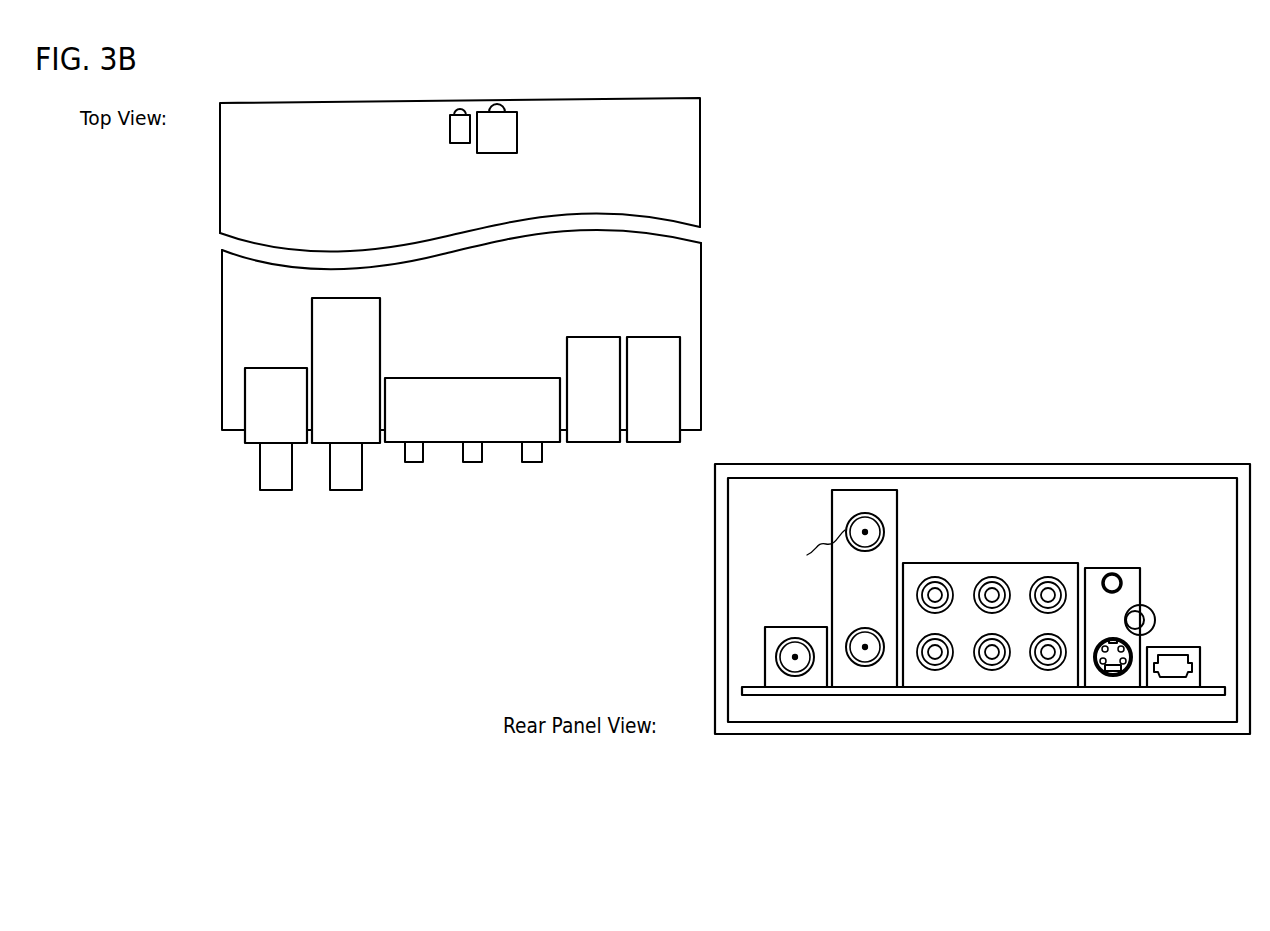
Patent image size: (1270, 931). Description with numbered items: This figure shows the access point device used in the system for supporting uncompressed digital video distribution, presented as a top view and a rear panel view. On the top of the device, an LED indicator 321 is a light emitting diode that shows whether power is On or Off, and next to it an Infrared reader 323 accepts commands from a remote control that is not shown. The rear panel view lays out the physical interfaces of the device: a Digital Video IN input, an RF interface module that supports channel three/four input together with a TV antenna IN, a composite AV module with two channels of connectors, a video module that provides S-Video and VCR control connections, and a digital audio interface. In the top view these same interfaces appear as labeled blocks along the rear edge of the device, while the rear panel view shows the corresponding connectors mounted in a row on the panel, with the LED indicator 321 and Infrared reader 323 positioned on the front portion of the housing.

The LED indicator 321 is at (452, 143).
The Infrared reader 323 is at (497, 153).